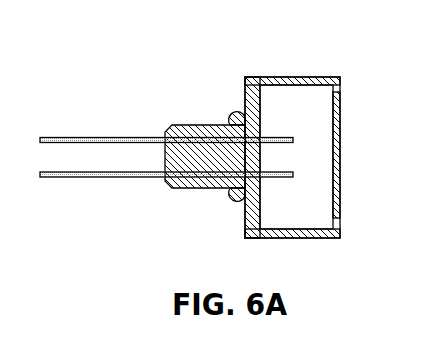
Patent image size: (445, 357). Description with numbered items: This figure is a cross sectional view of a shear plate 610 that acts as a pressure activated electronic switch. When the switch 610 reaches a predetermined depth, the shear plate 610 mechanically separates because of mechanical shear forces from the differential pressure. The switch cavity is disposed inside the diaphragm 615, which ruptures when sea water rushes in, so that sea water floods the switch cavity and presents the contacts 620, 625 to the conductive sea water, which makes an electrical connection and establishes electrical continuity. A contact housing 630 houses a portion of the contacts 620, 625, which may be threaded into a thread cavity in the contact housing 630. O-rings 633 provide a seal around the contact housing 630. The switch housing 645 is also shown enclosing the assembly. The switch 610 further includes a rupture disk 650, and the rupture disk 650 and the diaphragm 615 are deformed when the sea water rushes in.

The shear plate 610 is at (234, 138).
The diaphragm 615 is at (308, 128).
The contact 620 is at (112, 133).
The contact 625 is at (100, 180).
The contact housing 630 is at (213, 122).
The O-rings 633 is at (232, 207).
The switch housing 645 is at (296, 76).
The rupture disk 650 is at (342, 202).